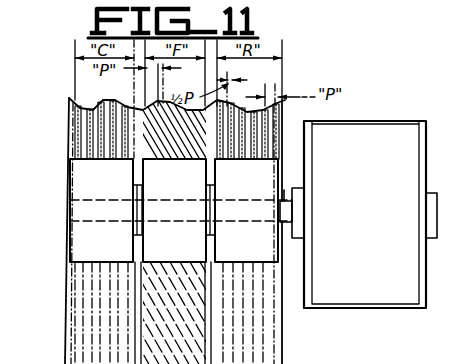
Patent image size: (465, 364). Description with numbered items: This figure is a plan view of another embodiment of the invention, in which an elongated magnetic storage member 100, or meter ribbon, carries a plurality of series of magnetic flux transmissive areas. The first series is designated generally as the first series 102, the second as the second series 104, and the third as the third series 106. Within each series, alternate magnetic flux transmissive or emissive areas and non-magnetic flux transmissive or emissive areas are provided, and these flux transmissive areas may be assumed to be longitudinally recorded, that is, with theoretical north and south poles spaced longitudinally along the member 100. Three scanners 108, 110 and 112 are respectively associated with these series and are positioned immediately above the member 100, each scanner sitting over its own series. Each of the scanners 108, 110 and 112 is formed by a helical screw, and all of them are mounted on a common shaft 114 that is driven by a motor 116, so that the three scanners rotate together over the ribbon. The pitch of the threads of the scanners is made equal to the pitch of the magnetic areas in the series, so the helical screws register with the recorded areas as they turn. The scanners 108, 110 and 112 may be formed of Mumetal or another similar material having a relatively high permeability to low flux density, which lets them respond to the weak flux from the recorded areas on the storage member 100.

The elongated magnetic storage member 100 is at (283, 356).
The first series of magnetic flux transmissive areas 102 is at (83, 322).
The second series of magnetic flux transmissive areas 104 is at (185, 316).
The third series of magnetic flux transmissive areas 106 is at (276, 334).
The scanner 108 is at (120, 184).
The scanner 110 is at (192, 184).
The scanner 112 is at (262, 184).
The common shaft 114 is at (288, 201).
The motor 116 is at (377, 132).